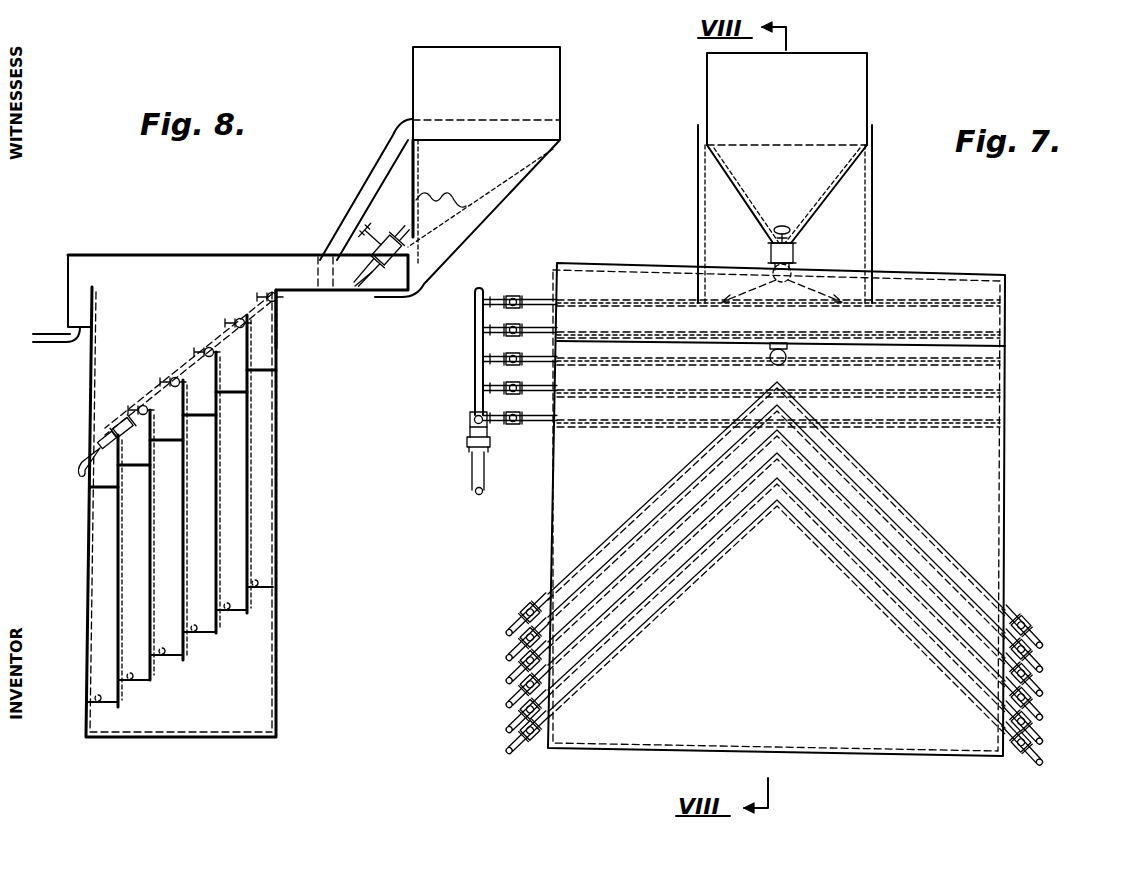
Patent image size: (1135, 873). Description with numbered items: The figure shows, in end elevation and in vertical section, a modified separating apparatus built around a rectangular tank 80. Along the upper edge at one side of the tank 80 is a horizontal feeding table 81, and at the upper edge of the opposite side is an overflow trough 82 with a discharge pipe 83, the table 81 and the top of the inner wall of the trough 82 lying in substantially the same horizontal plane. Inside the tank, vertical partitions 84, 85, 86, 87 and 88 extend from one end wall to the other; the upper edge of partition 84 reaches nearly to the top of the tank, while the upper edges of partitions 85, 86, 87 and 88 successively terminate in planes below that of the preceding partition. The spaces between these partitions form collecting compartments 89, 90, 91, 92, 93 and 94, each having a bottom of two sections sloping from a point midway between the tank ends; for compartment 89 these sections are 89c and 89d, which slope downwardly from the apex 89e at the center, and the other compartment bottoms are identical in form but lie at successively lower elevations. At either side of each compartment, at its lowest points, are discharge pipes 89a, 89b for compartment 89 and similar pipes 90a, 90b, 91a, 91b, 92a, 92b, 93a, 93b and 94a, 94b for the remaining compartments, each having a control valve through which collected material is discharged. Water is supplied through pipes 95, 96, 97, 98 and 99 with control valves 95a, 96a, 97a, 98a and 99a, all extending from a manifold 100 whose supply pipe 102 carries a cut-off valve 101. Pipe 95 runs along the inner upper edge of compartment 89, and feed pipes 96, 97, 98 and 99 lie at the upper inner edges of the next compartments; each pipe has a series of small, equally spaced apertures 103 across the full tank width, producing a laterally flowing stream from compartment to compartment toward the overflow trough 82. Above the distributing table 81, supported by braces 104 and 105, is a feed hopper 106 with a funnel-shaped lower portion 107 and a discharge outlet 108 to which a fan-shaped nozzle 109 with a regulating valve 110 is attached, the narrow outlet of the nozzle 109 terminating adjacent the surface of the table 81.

In FIG. 8, the tank 80 is at (90, 368).
In FIG. 7, the tank 80 is at (1006, 472).
In FIG. 8, the feeding table 81 is at (300, 293).
In FIG. 8, the overflow trough 82 is at (82, 315).
In FIG. 8, the discharge pipe 83 is at (58, 334).
In FIG. 7, the discharge pipe 83 is at (771, 362).
In FIG. 8, the vertical partition 84 is at (248, 452).
In FIG. 8, the vertical partition 85 is at (218, 505).
In FIG. 8, the vertical partition 86 is at (185, 478).
In FIG. 8, the vertical partition 87 is at (152, 530).
In FIG. 8, the vertical partition 88 is at (120, 508).
In FIG. 8, the collecting compartment 89 is at (268, 366).
In FIG. 8, the collecting compartment 90 is at (238, 386).
In FIG. 8, the collecting compartment 91 is at (205, 412).
In FIG. 8, the collecting compartment 92 is at (166, 428).
In FIG. 8, the collecting compartment 93 is at (134, 452).
In FIG. 8, the collecting compartment 94 is at (104, 474).
In FIG. 8, the discharge pipe 89a is at (255, 586).
In FIG. 7, the discharge pipe 89a is at (508, 625).
In FIG. 8, the discharge pipe 90a is at (227, 609).
In FIG. 7, the discharge pipe 90a is at (508, 651).
In FIG. 8, the discharge pipe 91a is at (194, 631).
In FIG. 7, the discharge pipe 91a is at (508, 674).
In FIG. 8, the discharge pipe 92a is at (162, 654).
In FIG. 7, the discharge pipe 92a is at (508, 698).
In FIG. 8, the discharge pipe 93a is at (130, 679).
In FIG. 7, the discharge pipe 93a is at (508, 723).
In FIG. 8, the discharge pipe 94a is at (98, 701).
In FIG. 7, the discharge pipe 94a is at (508, 745).
In FIG. 7, the discharge pipe 89b is at (1040, 640).
In FIG. 7, the discharge pipe 90b is at (1040, 664).
In FIG. 7, the discharge pipe 91b is at (1040, 688).
In FIG. 7, the discharge pipe 92b is at (1040, 712).
In FIG. 7, the discharge pipe 93b is at (1040, 736).
In FIG. 7, the discharge pipe 94b is at (1040, 760).
In FIG. 7, the bottom section 89c is at (656, 512).
In FIG. 7, the bottom section 89d is at (918, 505).
In FIG. 7, the apex 89e is at (780, 383).
In FIG. 7, the pipe 95 is at (490, 303).
In FIG. 7, the feed pipe 96 is at (490, 331).
In FIG. 8, the feed pipe 97 is at (268, 382).
In FIG. 7, the feed pipe 97 is at (490, 360).
In FIG. 7, the feed pipe 98 is at (490, 389).
In FIG. 7, the feed pipe 99 is at (470, 422).
In FIG. 7, the control valve 95a is at (515, 307).
In FIG. 7, the control valve 96a is at (515, 335).
In FIG. 7, the control valve 97a is at (515, 364).
In FIG. 7, the control valve 98a is at (515, 393).
In FIG. 7, the control valve 99a is at (515, 424).
In FIG. 8, the manifold 100 is at (182, 364).
In FIG. 7, the manifold 100 is at (482, 288).
In FIG. 8, the cut-off valve 101 is at (108, 430).
In FIG. 7, the cut-off valve 101 is at (468, 446).
In FIG. 8, the supply pipe 102 is at (82, 466).
In FIG. 7, the supply pipe 102 is at (471, 482).
In FIG. 7, the apertures 103 is at (618, 292).
In FIG. 8, the brace 104 is at (378, 164).
In FIG. 7, the brace 104 is at (698, 168).
In FIG. 8, the brace 105 is at (505, 212).
In FIG. 8, the feed hopper 106 is at (436, 76).
In FIG. 7, the feed hopper 106 is at (845, 103).
In FIG. 7, the funnel-shaped lower portion 107 is at (745, 195).
In FIG. 8, the discharge outlet 108 is at (382, 244).
In FIG. 7, the discharge outlet 108 is at (765, 247).
In FIG. 8, the fan-shaped nozzle 109 is at (360, 278).
In FIG. 7, the fan-shaped nozzle 109 is at (830, 270).
In FIG. 8, the regulating valve 110 is at (368, 224).
In FIG. 7, the regulating valve 110 is at (792, 232).